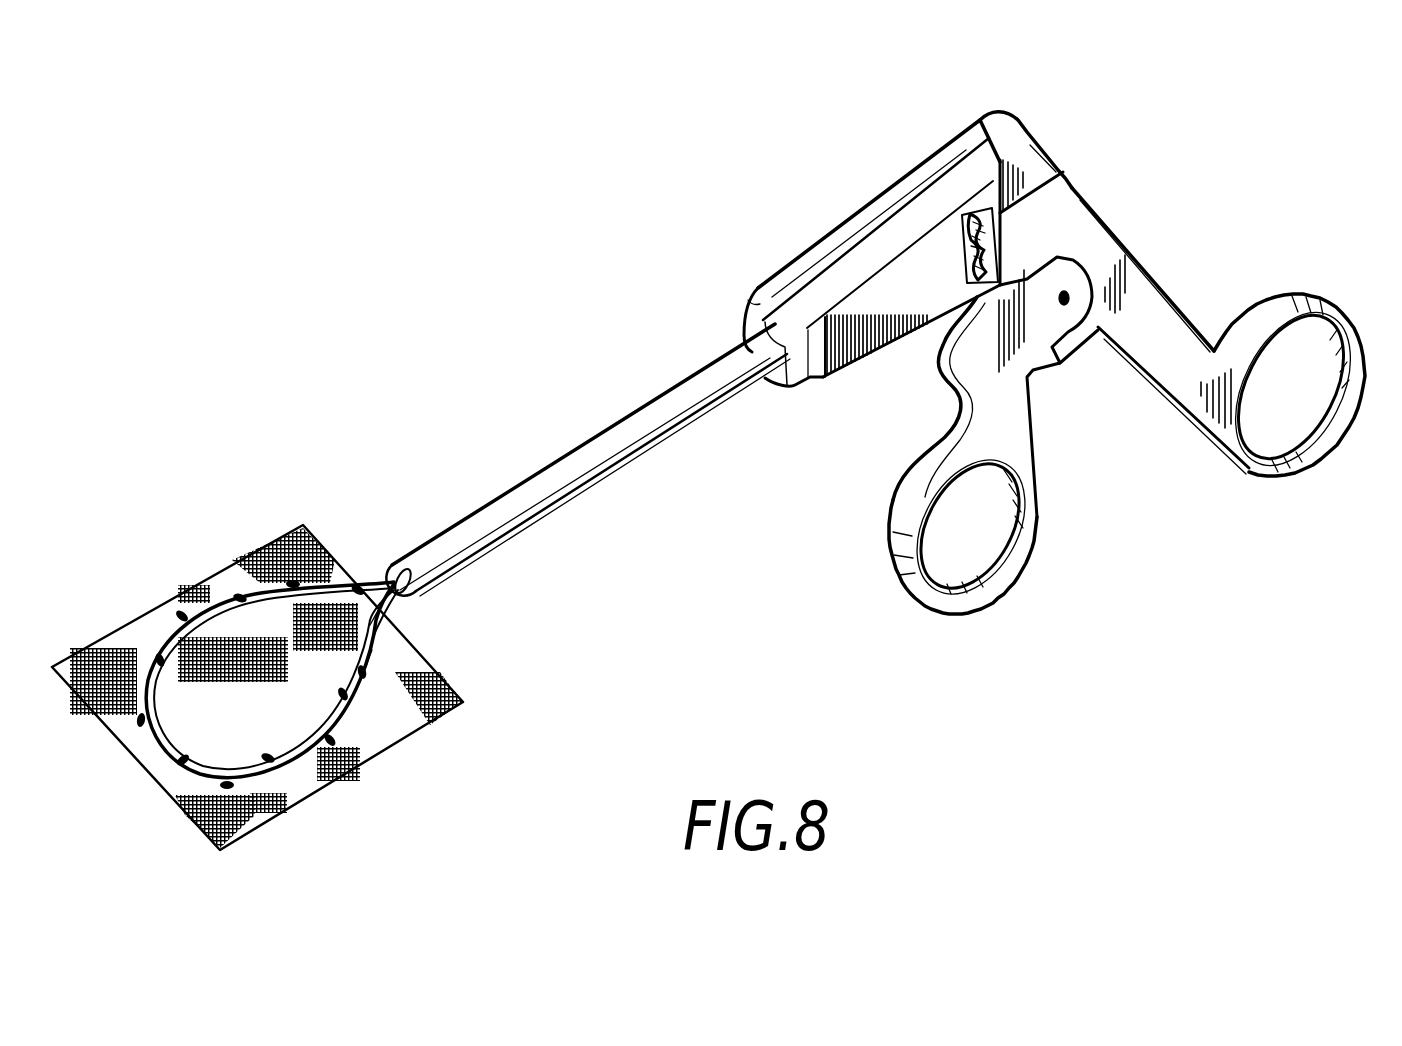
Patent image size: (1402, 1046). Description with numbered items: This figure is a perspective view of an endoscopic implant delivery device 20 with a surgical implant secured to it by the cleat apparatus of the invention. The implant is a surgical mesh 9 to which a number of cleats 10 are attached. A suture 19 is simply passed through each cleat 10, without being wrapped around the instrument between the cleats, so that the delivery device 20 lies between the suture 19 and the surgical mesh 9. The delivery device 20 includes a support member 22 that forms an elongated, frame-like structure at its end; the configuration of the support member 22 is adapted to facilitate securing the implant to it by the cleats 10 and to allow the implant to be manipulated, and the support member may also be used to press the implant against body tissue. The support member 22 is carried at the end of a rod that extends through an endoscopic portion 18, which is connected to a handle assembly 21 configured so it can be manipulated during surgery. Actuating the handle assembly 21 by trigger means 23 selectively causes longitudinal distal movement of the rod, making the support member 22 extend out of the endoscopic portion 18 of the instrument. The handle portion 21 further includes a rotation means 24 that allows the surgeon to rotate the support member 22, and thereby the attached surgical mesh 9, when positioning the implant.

The surgical mesh 9 is at (285, 528).
The cleats 10 is at (165, 608).
The endoscopic portion 18 is at (588, 455).
The suture 19 is at (400, 630).
The delivery device 20 is at (695, 250).
The handle assembly 21 is at (823, 230).
The support member 22 is at (170, 770).
The trigger means 23 is at (896, 592).
The rotation means 24 is at (977, 213).